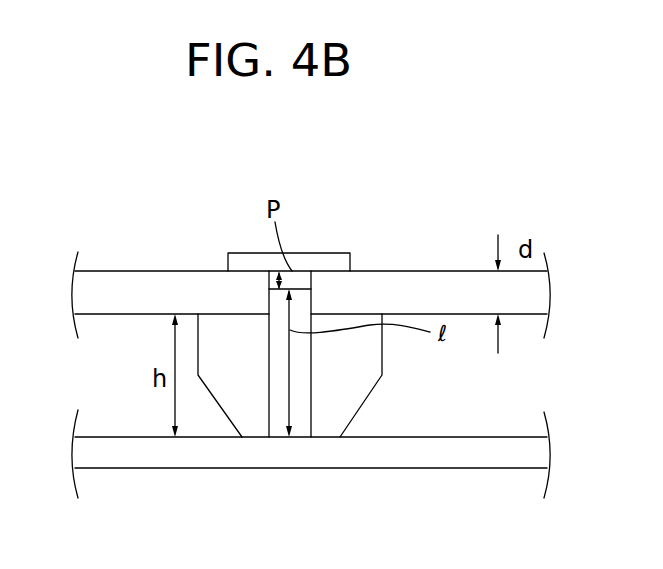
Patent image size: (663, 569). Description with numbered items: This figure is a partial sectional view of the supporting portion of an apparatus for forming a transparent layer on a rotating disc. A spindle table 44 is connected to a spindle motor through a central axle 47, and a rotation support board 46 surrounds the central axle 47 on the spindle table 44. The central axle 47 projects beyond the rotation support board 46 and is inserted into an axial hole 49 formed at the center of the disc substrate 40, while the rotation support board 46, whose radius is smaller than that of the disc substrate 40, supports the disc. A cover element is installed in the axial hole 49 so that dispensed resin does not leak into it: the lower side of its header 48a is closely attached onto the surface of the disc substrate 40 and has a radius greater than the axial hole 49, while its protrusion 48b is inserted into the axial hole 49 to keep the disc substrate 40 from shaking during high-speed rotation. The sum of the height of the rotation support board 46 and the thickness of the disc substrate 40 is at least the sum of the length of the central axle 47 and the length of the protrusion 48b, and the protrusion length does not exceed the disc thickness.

The disc substrate 40 is at (125, 278).
The spindle table 44 is at (485, 462).
The rotation support board 46 is at (370, 363).
The central axle 47 is at (298, 400).
The header 48a is at (245, 265).
The protrusion 48b is at (302, 280).
The axial hole 49 is at (310, 302).